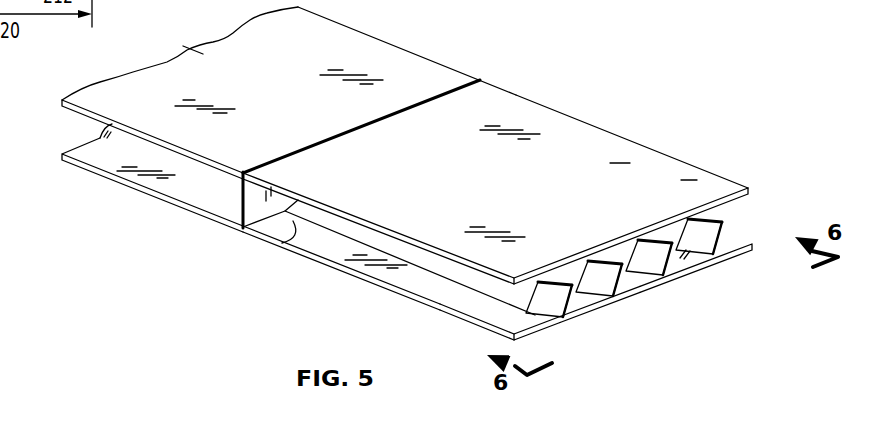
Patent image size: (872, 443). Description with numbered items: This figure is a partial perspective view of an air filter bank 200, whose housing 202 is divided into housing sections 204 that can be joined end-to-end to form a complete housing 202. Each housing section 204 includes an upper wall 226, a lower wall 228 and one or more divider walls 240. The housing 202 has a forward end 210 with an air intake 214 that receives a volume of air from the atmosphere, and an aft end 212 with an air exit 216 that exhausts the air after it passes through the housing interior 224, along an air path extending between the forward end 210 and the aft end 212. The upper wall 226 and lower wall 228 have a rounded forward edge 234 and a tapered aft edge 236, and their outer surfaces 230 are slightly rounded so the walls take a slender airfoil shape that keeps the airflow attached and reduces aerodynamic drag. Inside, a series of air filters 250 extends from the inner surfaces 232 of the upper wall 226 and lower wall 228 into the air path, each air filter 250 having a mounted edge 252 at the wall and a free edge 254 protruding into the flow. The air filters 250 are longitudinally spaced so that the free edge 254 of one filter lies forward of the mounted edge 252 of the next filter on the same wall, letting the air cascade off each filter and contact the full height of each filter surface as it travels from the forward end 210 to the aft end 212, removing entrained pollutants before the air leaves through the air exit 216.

The air filter bank 200 is at (403, 49).
The housing 202 is at (516, 93).
The housing section 204 is at (131, 187).
The forward end 210 is at (518, 338).
The aft end 212 is at (752, 247).
The air intake 214 is at (426, 285).
The air exit 216 is at (744, 211).
The housing interior 224 is at (185, 182).
The upper wall 226 is at (620, 163).
The lower wall 228 is at (639, 291).
The outer surface 230 is at (689, 179).
The inner surface 232 is at (684, 256).
The rounded forward edge 234 is at (455, 314).
The tapered aft edge 236 is at (571, 116).
The divider wall 240 is at (261, 205).
The air filter 250 is at (592, 292).
The mounted edge 252 is at (296, 222).
The free edge 254 is at (728, 226).